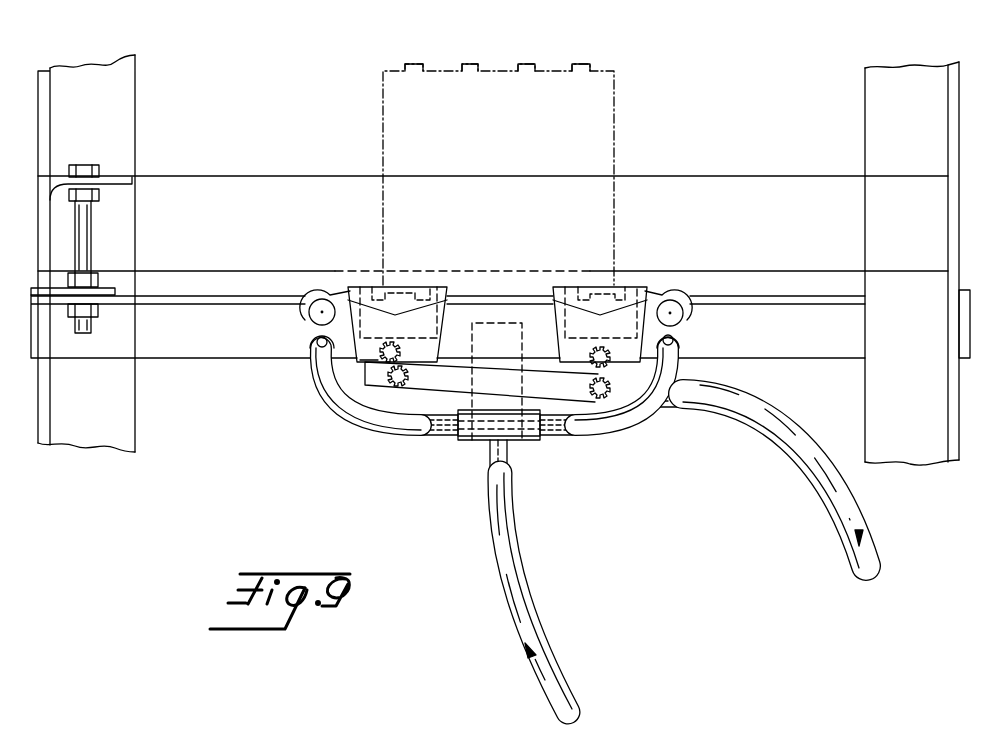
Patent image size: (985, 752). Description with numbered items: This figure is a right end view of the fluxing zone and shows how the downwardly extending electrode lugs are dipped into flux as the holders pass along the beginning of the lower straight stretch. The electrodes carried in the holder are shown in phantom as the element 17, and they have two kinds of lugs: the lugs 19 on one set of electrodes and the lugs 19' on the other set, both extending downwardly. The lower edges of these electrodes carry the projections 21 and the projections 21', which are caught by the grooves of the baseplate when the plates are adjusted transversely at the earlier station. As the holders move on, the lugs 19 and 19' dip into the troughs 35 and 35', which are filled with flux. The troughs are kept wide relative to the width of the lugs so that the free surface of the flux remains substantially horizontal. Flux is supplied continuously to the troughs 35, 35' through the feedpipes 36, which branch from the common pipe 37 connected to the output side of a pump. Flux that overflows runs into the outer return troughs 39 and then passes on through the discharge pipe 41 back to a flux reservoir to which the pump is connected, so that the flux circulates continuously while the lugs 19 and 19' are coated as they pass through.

The container / bin shown in phantom 17 is at (600, 135).
The lugs 19 is at (600, 297).
The lugs 19' is at (395, 297).
The projections 21 is at (533, 45).
The projections 21' is at (478, 45).
The trough 35 is at (655, 279).
The trough 35' is at (317, 297).
The feedpipes 36 is at (360, 415).
The common pipe 37 is at (515, 627).
The outer return troughs 39 is at (656, 271).
The discharge pipe 41 is at (830, 492).